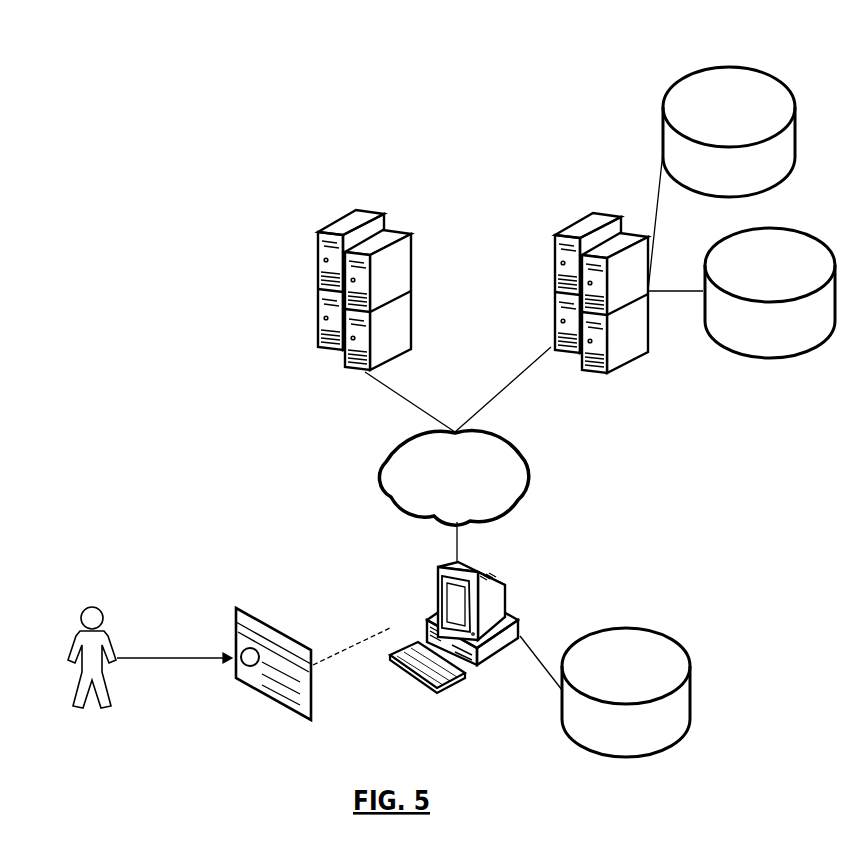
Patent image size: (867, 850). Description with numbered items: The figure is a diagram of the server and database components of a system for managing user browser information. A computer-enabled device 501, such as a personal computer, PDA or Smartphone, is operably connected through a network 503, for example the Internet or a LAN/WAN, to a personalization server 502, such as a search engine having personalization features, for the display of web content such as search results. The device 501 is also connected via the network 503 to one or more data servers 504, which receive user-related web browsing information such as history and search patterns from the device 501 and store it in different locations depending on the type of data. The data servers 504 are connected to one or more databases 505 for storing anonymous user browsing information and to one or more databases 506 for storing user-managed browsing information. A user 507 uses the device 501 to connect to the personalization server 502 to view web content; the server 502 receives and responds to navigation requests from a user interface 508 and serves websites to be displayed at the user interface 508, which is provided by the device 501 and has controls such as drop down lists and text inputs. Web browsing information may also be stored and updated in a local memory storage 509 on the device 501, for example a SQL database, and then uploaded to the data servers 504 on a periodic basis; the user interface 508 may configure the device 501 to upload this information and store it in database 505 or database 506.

The computer-enabled device 501 is at (506, 593).
The personalization server 502 is at (316, 258).
The network 503 is at (453, 478).
The data server 504 is at (553, 258).
The database 505 is at (729, 132).
The database 506 is at (770, 293).
The user 507 is at (90, 606).
The user interface 508 is at (233, 607).
The local memory storage 509 is at (626, 692).